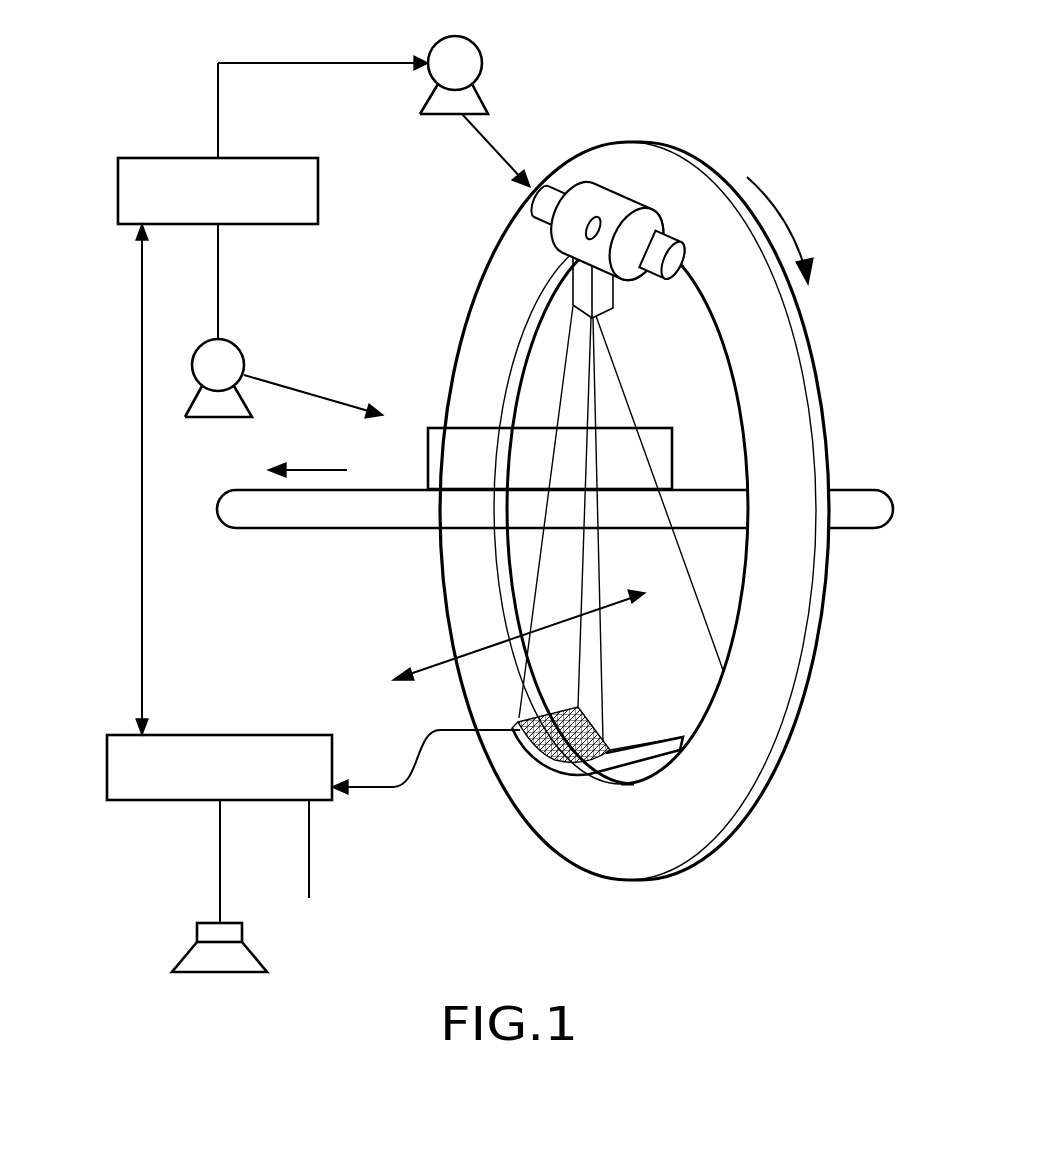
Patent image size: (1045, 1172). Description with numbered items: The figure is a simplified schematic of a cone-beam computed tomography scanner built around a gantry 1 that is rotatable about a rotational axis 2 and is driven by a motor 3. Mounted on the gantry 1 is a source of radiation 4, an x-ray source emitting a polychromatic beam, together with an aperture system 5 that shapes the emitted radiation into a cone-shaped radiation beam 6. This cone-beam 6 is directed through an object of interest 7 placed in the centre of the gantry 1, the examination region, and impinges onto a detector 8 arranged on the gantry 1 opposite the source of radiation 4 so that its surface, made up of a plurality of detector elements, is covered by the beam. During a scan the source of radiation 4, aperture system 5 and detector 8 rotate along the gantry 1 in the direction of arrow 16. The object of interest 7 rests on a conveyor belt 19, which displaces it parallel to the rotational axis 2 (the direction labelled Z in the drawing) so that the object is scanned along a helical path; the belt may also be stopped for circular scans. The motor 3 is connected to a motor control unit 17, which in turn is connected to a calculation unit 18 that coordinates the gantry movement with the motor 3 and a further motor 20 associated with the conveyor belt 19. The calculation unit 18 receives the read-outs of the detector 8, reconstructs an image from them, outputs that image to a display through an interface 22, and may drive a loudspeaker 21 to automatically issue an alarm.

The gantry 1 is at (775, 666).
The rotational axis 2 is at (313, 470).
The motor 3 is at (474, 46).
The source of radiation 4 is at (612, 206).
The aperture system 5 is at (578, 292).
The cone-shaped radiation beam 6 is at (632, 378).
The object of interest 7 is at (428, 468).
The detector 8 is at (560, 778).
The arrow 16 is at (780, 218).
The motor control unit 17 is at (176, 158).
The calculation unit 18 is at (257, 735).
The conveyor belt 19 is at (858, 498).
The motor 20 is at (243, 350).
The loudspeaker 21 is at (218, 972).
The interface 22 is at (309, 870).
The Z axis Z is at (435, 660).